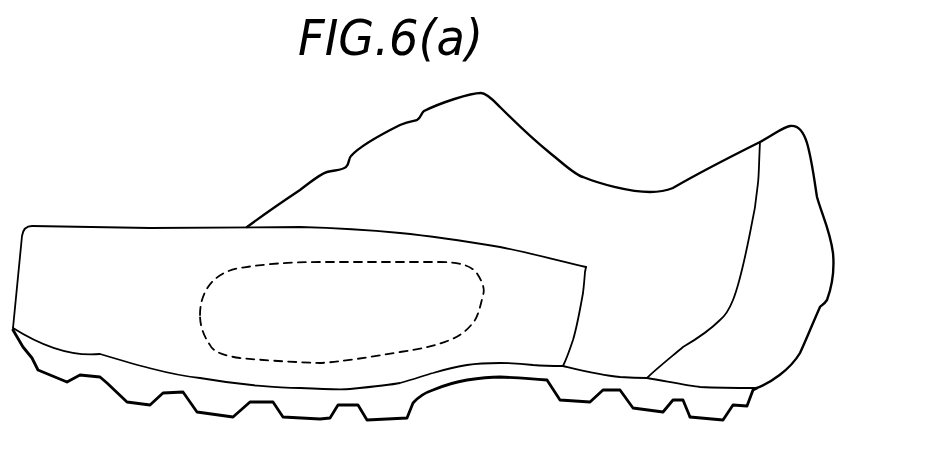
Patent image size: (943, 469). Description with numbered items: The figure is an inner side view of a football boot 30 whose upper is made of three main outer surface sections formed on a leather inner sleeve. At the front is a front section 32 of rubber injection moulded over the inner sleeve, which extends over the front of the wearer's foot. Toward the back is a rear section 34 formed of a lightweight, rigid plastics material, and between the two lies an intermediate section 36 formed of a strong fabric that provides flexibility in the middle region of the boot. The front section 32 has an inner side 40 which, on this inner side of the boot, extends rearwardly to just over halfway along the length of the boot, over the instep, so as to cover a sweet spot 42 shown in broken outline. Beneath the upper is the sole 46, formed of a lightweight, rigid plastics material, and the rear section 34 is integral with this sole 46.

The boot 30 is at (145, 229).
The front section 32 is at (150, 351).
The rear section 34 is at (807, 310).
The intermediate section 36 is at (618, 363).
The inner side 40 is at (130, 309).
The sweet spot 42 is at (378, 346).
The sole 46 is at (733, 408).